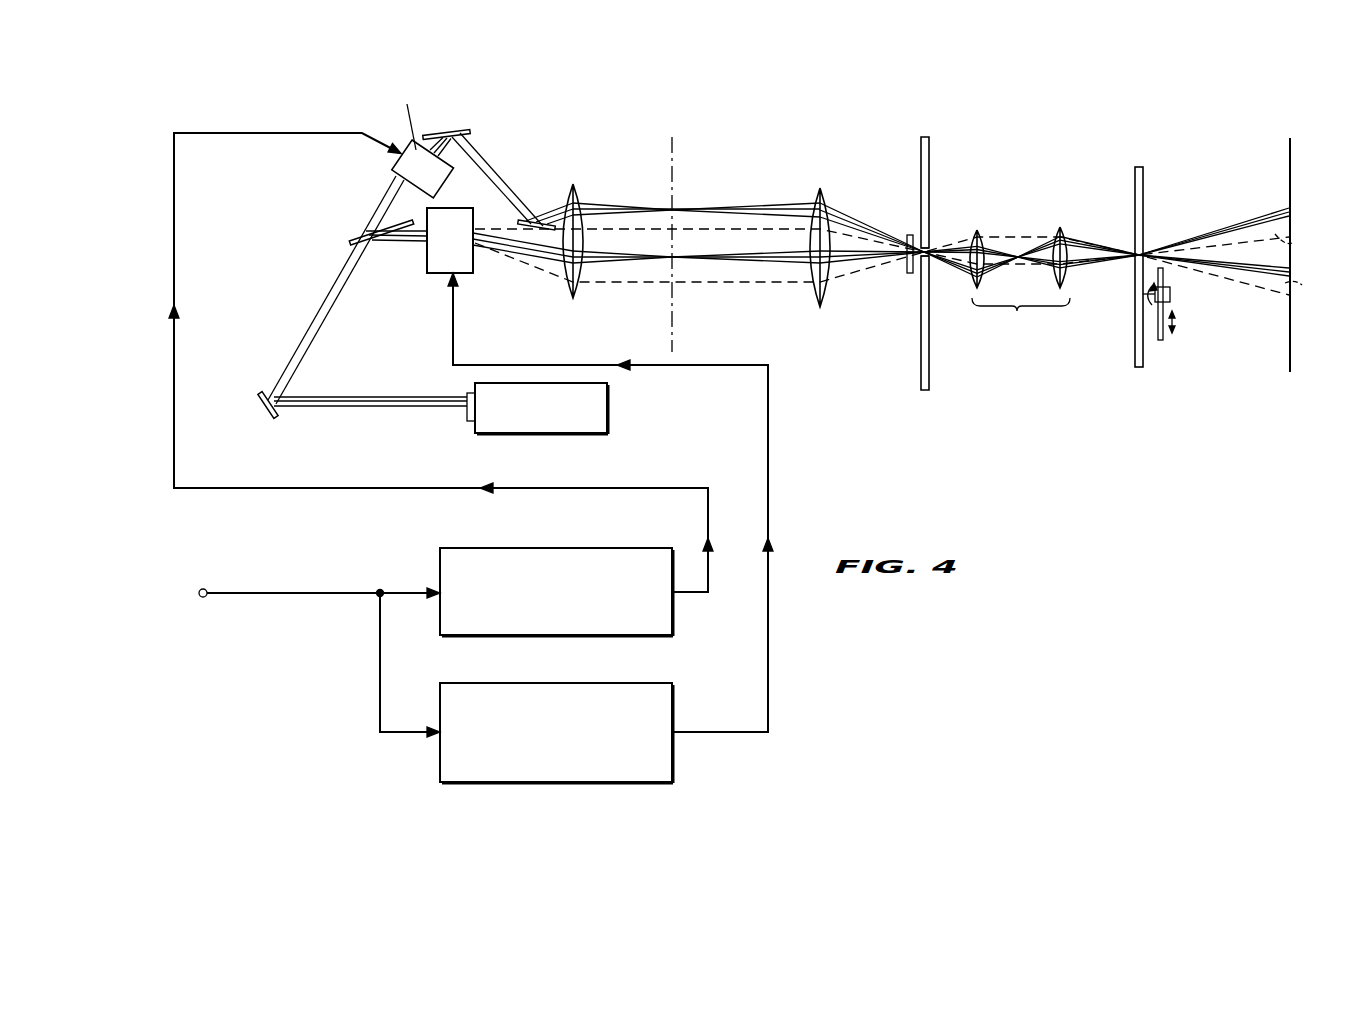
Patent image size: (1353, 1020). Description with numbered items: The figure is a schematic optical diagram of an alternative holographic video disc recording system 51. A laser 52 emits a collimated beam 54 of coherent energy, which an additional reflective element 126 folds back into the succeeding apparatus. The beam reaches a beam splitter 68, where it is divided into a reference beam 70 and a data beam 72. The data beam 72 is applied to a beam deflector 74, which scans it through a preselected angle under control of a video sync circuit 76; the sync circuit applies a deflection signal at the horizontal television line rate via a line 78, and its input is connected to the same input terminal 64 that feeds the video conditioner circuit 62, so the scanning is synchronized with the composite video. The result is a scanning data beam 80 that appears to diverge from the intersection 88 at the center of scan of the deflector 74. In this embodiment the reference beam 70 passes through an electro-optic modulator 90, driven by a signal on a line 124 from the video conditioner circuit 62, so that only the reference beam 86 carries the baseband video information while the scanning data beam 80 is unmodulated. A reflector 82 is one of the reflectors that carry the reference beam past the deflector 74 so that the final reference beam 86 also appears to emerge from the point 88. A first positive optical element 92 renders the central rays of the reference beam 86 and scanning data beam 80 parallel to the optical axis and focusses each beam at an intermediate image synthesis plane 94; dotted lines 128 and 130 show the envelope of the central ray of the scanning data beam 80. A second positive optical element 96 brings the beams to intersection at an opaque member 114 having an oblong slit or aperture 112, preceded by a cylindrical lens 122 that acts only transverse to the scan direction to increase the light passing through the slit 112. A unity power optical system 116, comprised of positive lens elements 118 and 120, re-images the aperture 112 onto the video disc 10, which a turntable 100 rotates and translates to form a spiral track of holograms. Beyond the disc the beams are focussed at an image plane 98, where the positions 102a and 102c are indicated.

The line 124 is at (345, 133).
The electro-optic modulator 90 is at (393, 172).
The reflector 82 is at (465, 130).
The reference beam 86 is at (552, 208).
The reference beam 70 is at (383, 220).
The beam splitter 68 is at (354, 243).
The data beam 72 is at (409, 246).
The beam deflector 74 is at (436, 275).
The intersection 88 is at (476, 246).
The scanning data beam 80 is at (537, 260).
The first positive optical element 92 is at (578, 292).
The intermediate image synthesis plane 94 is at (675, 178).
The dotted line 128 is at (725, 228).
The dotted line 130 is at (740, 287).
The second positive optical element 96 is at (827, 296).
The recording system 51 is at (817, 145).
The cylindrical lens 122 is at (912, 235).
The opaque member 114 is at (987, 394).
The slit 112 is at (937, 266).
The positive lens element 118 is at (978, 230).
The positive lens element 120 is at (1062, 227).
The unity power optical system 116 is at (1021, 317).
The video disc 10 is at (1134, 350).
The turntable 100 is at (1162, 342).
The image plane 98 is at (1290, 352).
The image point 102c is at (1308, 235).
The image point 102a is at (1314, 295).
The reflective element 126 is at (258, 410).
The collimated beam 54 is at (400, 410).
The laser 52 is at (607, 412).
The line 78 is at (770, 660).
The input terminal 64 is at (201, 589).
The video conditioner circuit 62 is at (673, 620).
The video sync circuit 76 is at (673, 778).